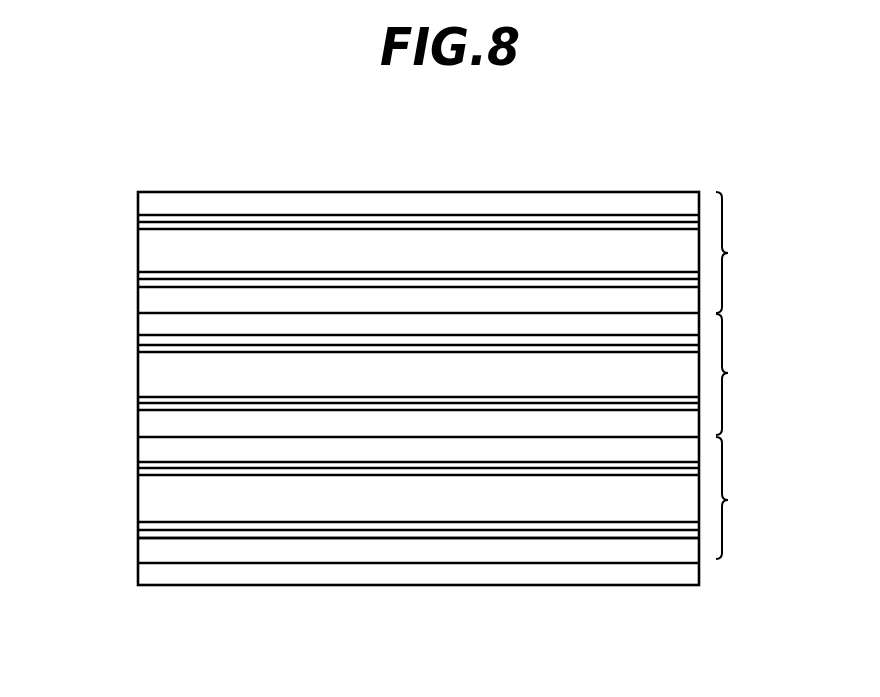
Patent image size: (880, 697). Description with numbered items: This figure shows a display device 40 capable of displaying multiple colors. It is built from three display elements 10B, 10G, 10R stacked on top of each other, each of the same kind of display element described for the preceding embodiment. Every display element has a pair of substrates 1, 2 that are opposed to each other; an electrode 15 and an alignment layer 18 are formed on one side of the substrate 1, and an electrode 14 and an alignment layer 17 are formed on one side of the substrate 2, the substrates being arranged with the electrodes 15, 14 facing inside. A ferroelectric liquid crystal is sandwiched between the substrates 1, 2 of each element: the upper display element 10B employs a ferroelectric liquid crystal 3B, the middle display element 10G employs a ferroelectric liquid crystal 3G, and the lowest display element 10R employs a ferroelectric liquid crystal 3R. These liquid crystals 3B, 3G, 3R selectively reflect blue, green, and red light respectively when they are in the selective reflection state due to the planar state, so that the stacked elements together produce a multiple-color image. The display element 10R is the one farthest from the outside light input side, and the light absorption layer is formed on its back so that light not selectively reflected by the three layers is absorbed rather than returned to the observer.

The organic EL display device 40 is at (182, 130).
The substrate 1 is at (152, 207).
The substrate 2 is at (152, 302).
The ferroelectric liquid crystal 3B is at (238, 245).
The ferroelectric liquid crystal 3G is at (222, 378).
The ferroelectric liquid crystal 3R is at (343, 508).
The electrode 14 is at (541, 536).
The electrode 15 is at (623, 219).
The alignment layer 17 is at (453, 528).
The alignment layer 18 is at (527, 228).
The display element 10B is at (755, 252).
The display element 10G is at (756, 374).
The display element 10R is at (755, 498).